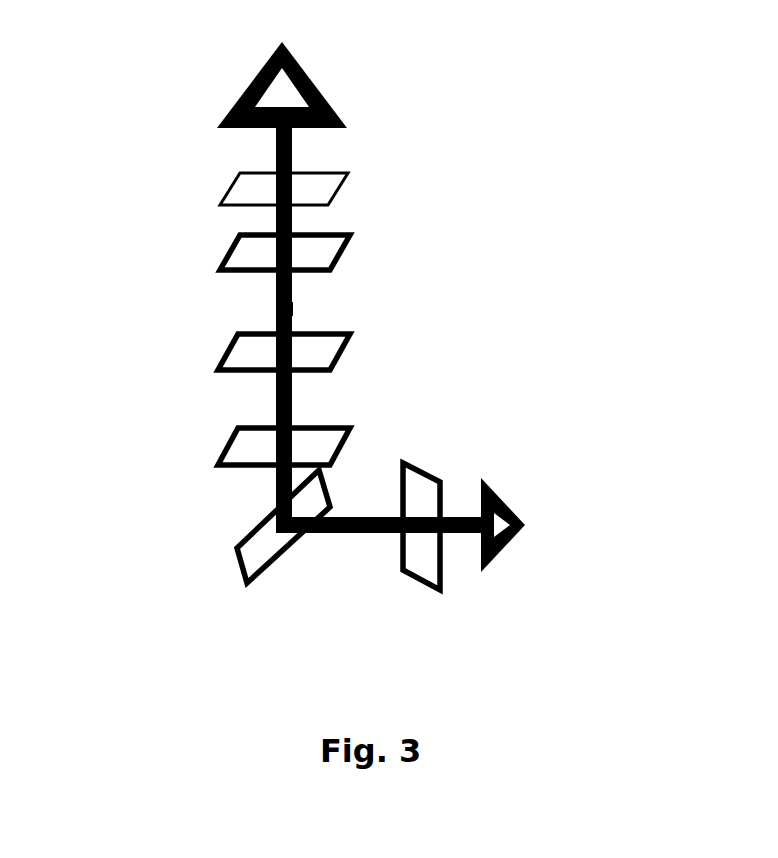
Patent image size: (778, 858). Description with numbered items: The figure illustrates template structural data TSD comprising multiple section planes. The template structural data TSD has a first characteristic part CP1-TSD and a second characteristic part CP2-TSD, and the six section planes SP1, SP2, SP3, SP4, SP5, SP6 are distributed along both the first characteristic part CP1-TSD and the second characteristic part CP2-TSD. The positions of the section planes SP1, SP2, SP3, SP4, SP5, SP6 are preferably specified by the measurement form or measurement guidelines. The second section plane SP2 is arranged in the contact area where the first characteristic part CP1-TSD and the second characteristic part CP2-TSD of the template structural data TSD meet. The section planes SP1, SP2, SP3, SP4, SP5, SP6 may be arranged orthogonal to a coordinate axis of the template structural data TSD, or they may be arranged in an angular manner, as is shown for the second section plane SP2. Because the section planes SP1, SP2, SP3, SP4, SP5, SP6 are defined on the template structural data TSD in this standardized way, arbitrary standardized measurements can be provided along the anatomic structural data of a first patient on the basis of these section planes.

The template structural data TSD is at (95, 59).
The sixth section plane SP6 is at (250, 189).
The fifth section plane SP5 is at (250, 255).
The fourth section plane SP4 is at (248, 357).
The third section plane SP3 is at (248, 440).
The second section plane SP2 is at (257, 562).
The first section plane SP1 is at (418, 552).
The second characteristic part of the template structural data CP2-TSD is at (295, 309).
The first characteristic part of the template structural data CP1-TSD is at (352, 517).